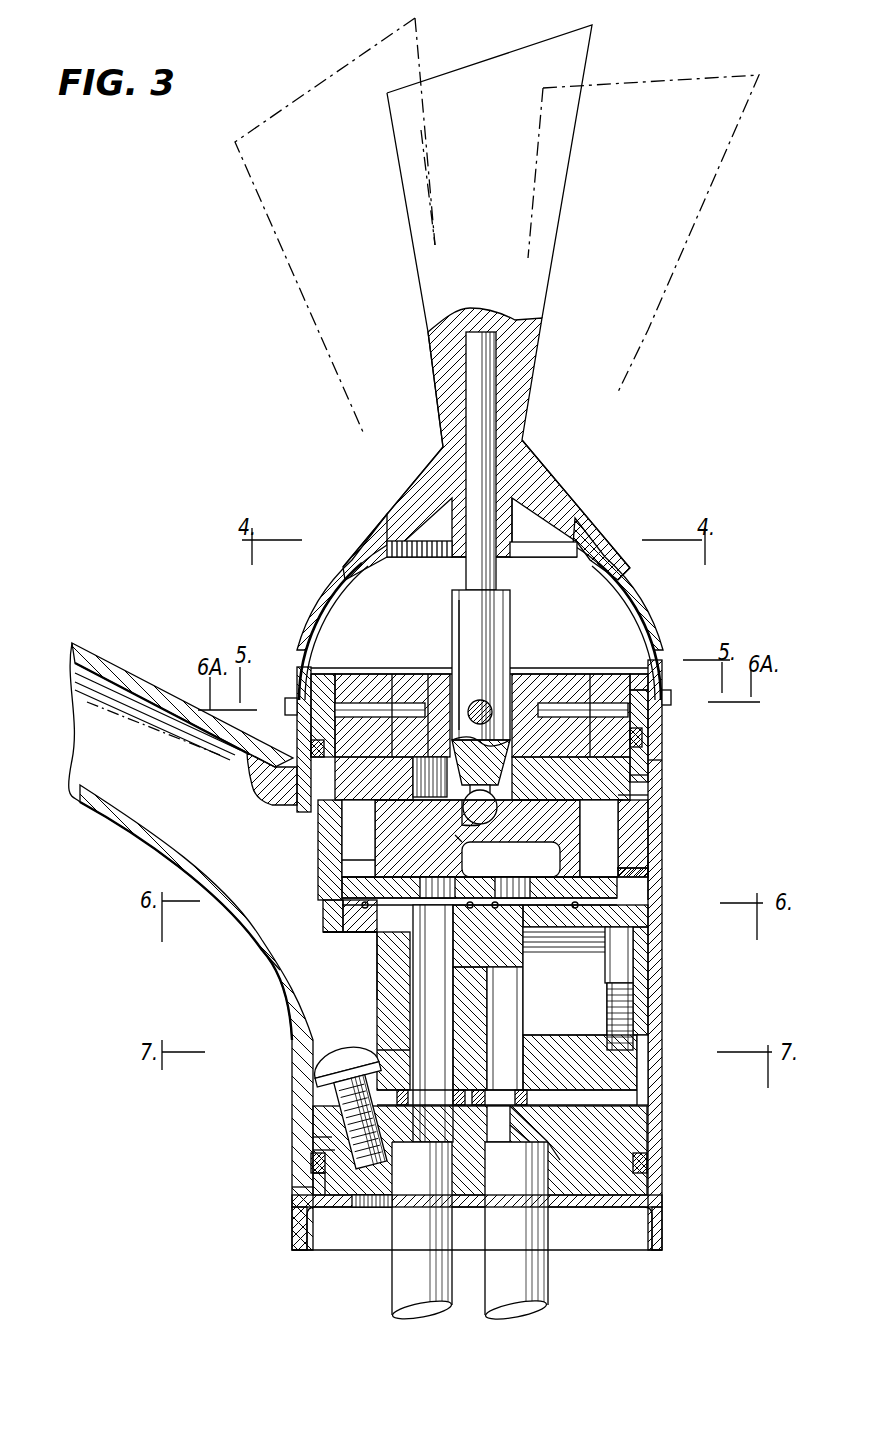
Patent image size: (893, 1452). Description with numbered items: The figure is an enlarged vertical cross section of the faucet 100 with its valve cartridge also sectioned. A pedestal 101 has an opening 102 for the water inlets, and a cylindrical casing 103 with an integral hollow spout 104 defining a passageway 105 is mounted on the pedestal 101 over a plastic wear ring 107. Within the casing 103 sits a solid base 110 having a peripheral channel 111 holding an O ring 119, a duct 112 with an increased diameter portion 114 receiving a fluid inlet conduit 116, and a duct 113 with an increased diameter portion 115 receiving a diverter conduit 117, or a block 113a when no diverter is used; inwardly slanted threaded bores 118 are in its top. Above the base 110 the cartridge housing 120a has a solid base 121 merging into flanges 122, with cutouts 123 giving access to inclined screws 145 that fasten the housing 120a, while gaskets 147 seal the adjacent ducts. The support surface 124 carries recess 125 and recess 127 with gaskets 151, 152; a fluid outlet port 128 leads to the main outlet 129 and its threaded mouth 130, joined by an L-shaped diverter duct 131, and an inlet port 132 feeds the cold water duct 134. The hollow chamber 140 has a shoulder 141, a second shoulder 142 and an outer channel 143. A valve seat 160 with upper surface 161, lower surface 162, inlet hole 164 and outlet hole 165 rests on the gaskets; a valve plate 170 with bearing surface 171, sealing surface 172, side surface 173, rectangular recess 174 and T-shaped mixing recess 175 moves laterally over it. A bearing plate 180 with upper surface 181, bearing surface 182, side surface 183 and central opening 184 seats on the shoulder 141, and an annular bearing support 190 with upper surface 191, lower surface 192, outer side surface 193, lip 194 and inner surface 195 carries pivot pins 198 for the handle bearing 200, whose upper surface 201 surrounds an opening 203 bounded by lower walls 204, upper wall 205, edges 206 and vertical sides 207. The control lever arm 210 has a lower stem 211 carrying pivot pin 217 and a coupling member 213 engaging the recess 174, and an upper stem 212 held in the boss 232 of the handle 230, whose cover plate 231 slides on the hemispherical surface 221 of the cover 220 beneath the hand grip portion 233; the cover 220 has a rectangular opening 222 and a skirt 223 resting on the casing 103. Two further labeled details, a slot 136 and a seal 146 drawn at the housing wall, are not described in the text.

The faucet 100 is at (714, 438).
The pedestal 101 is at (292, 1240).
The opening 102 is at (362, 1210).
The casing 103 is at (312, 1160).
The spout 104 is at (130, 825).
The passageway 105 is at (105, 760).
The plastic wear ring 107 is at (298, 1190).
The base 110 is at (660, 1142).
The channel 111 is at (642, 1182).
The duct 112 is at (330, 1150).
The duct 113 is at (492, 1135).
The block 113a is at (548, 1200).
The increased diameter portion 114 is at (370, 1210).
The increased diameter portion 115 is at (552, 1190).
The fluid inlet conduit 116 is at (400, 1283).
The diverter conduit 117 is at (545, 1292).
The threaded bores 118 is at (350, 1120).
The elastomeric O ring 119 is at (318, 1177).
The housing 120a is at (687, 1002).
The base 121 is at (628, 1060).
The feet or flanges 122 is at (320, 1082).
The cutout or recess 123 is at (372, 936).
The support surface 124 is at (333, 908).
The recess 125 is at (300, 952).
The recess 127 is at (652, 873).
The fluid outlet port 128 is at (538, 932).
The main outlet 129 is at (587, 968).
The mouth 130 is at (607, 1030).
The L-shaped diverter duct 131 is at (512, 1015).
The inlet port 132 is at (372, 912).
The cold water duct 134 is at (420, 988).
The slot 136 is at (642, 1072).
The chamber 140 is at (652, 830).
The shoulder 141 is at (652, 793).
The second shoulder 142 is at (648, 690).
The channel 143 is at (660, 765).
The screws 145 is at (347, 1050).
The seal 146 is at (645, 742).
The gaskets 147 is at (640, 1097).
The gasket 151 is at (340, 918).
The gasket 152 is at (650, 882).
The valve seat 160 is at (342, 892).
The upper surface 161 is at (342, 870).
The lower surface 162 is at (622, 907).
The inlet hole 164 is at (340, 845).
The outlet hole 165 is at (655, 868).
The valve plate 170 is at (600, 830).
The bearing surface 171 is at (344, 803).
The sealing surface 172 is at (342, 862).
The side surface 173 is at (362, 838).
The recess 174 is at (498, 821).
The recess 175 is at (535, 843).
The bearing plate 180 is at (290, 745).
The upper surface 181 is at (650, 725).
The bearing surface 182 is at (650, 773).
The side surface 183 is at (260, 784).
The opening 184 is at (447, 804).
The bearing support 190 is at (333, 576).
The upper surface 191 is at (328, 725).
The lower surface 192 is at (307, 705).
The outer side surface 193 is at (671, 704).
The lip 194 is at (331, 760).
The inner cylindrical surface 195 is at (365, 690).
The pivot pins 198 is at (364, 700).
The handle bearing 200 is at (392, 690).
The upper surface 201 is at (426, 690).
The opening 203 is at (490, 710).
The lower walls 204 is at (500, 775).
The upper wall 205 is at (449, 690).
The edge 206 is at (530, 690).
The sides 207 is at (592, 695).
The control lever arm 210 is at (511, 371).
The lower stem 211 is at (540, 558).
The upper stem 212 is at (486, 412).
The coupling member 213 is at (470, 837).
The pivot pin 217 is at (497, 695).
The cover 220 is at (337, 578).
The hemispherical outer surface 221 is at (318, 666).
The rectangular opening 222 is at (405, 522).
The skirt 223 is at (660, 662).
The handle 230 is at (578, 492).
The cover plate 231 is at (555, 547).
The boss 232 is at (505, 528).
The hand grip portion 233 is at (430, 385).